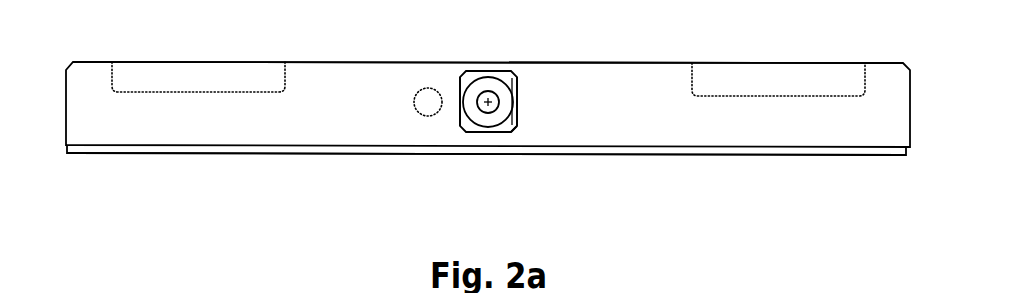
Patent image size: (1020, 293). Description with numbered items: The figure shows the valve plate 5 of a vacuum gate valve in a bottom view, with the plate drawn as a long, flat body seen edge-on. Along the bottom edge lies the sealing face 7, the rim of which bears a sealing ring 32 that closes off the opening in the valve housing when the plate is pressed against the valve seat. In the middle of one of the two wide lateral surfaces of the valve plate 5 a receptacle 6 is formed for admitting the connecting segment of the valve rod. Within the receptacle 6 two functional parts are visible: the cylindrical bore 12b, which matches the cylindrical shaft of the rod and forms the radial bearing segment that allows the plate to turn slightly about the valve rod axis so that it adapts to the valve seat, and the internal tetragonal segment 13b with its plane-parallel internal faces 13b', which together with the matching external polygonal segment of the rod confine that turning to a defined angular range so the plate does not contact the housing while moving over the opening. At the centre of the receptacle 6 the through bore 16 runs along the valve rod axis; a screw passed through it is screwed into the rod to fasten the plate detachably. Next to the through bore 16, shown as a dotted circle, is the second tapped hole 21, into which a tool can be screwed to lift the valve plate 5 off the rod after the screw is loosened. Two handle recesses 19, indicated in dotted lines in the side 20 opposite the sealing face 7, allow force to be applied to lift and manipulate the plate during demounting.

The valve plate 5 is at (88, 48).
The receptacle 6 is at (473, 55).
The sealing face 7 is at (710, 157).
The cylindrical bore 12b is at (511, 129).
The internal tetragonal segment 13b is at (464, 167).
The plane-parallel internal faces 13b' is at (508, 140).
The through bore 16 is at (493, 97).
The handle recesses 19 is at (203, 73).
The side opposite to the sealing face 20 is at (623, 62).
The second tapped hole 21 is at (413, 97).
The sealing ring 32 is at (788, 152).